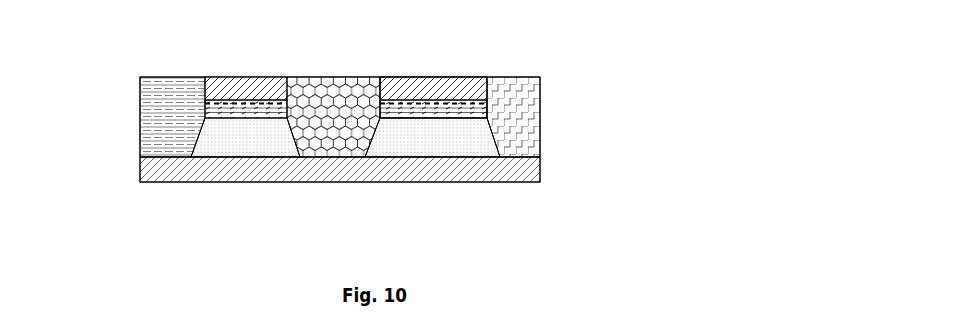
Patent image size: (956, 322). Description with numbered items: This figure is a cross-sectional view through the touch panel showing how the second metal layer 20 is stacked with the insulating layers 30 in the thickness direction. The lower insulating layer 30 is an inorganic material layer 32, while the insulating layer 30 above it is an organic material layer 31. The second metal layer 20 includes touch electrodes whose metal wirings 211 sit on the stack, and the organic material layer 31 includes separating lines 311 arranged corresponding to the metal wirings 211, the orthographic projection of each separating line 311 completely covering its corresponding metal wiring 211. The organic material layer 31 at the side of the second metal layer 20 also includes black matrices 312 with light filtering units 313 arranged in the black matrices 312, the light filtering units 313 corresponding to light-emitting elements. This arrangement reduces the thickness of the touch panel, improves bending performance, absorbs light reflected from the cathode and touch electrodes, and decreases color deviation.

The second metal layer 20 is at (500, 108).
The metal wiring 211 is at (217, 85).
The black matrix 312 is at (240, 82).
The light filtering unit 313 is at (152, 88).
The separating line 311 is at (283, 146).
The insulating layer 30 is at (397, 192).
The organic material layer 31 is at (345, 192).
The inorganic material layer 32 is at (540, 172).